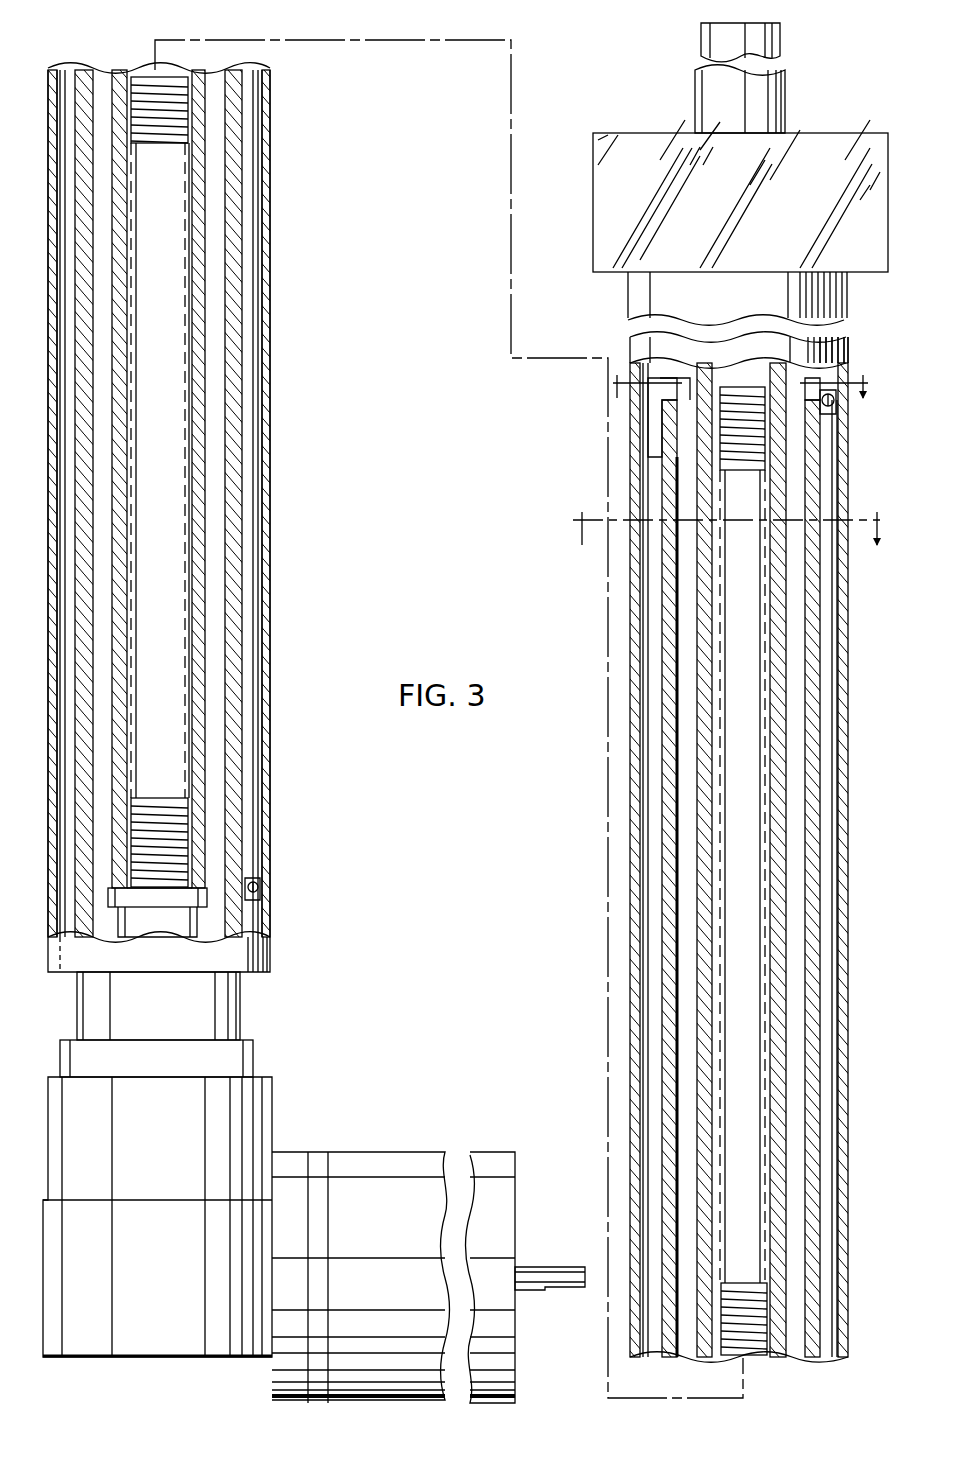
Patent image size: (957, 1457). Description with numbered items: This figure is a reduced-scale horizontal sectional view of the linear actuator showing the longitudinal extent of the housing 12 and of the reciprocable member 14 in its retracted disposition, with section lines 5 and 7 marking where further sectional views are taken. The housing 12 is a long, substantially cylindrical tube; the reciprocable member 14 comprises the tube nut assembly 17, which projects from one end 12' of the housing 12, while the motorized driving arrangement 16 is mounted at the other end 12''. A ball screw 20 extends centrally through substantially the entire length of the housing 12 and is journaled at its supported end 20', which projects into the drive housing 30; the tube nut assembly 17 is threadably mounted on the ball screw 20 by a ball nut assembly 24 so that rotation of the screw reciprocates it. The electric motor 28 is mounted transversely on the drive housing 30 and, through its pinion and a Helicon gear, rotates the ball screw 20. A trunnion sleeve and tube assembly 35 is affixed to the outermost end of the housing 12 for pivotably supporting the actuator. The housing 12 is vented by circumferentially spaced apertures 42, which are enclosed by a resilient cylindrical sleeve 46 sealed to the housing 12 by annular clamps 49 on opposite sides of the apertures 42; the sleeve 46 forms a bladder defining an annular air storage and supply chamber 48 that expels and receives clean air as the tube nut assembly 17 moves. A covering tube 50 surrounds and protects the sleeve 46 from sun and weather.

The tubular housing 12 is at (197, 503).
The one end of the housing 12' is at (768, 857).
The other end of the housing 12'' is at (195, 1006).
The reciprocable member 14 is at (696, 102).
The motorized driving arrangement 16 is at (278, 1122).
The tube nut assembly 17 is at (197, 127).
The ball screw 20 is at (449, 713).
The supported end of the ball screw 20' is at (859, 342).
The ball nut assembly 24 is at (169, 928).
The electric motor 28 is at (386, 1230).
The drive housing 30 is at (162, 1285).
The trunnion sleeve and tube assembly 35 is at (829, 253).
The apertures 42 is at (668, 445).
The cylindrical sleeve 46 is at (255, 848).
The air storage and supply chamber 48 is at (248, 807).
The annular clamp 49 is at (260, 906).
The covering tube 50 is at (272, 232).
The section line 5- 5 is at (728, 544).
The section line 7- 7 is at (740, 402).